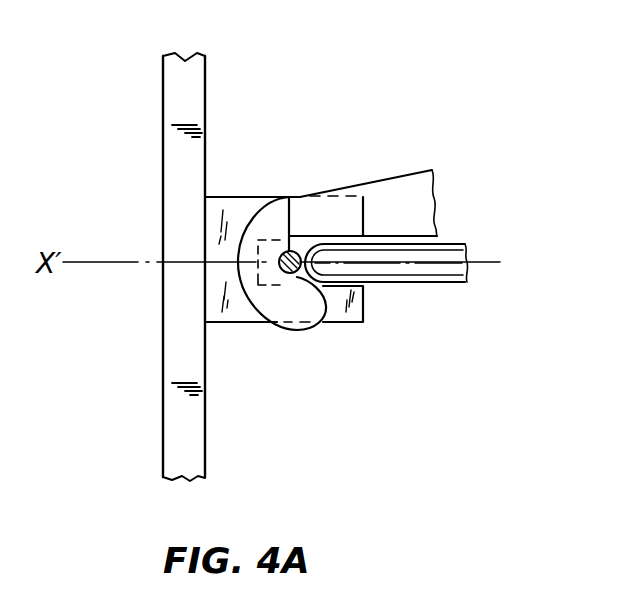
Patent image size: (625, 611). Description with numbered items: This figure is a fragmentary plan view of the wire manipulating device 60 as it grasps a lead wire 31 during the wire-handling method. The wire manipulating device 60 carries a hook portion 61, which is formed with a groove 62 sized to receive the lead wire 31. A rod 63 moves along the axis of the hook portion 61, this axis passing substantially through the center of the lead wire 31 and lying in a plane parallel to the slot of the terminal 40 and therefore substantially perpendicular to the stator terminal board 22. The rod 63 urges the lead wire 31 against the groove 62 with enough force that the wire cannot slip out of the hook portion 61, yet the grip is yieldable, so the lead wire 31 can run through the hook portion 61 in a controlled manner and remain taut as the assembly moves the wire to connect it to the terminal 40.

The stator terminal board 22 is at (207, 462).
The lead wire 31 is at (292, 196).
The terminal 40 is at (363, 325).
The wire manipulating device 60 is at (432, 170).
The hook portion 61 is at (303, 196).
The groove 62 is at (280, 285).
The rod 63 is at (433, 280).